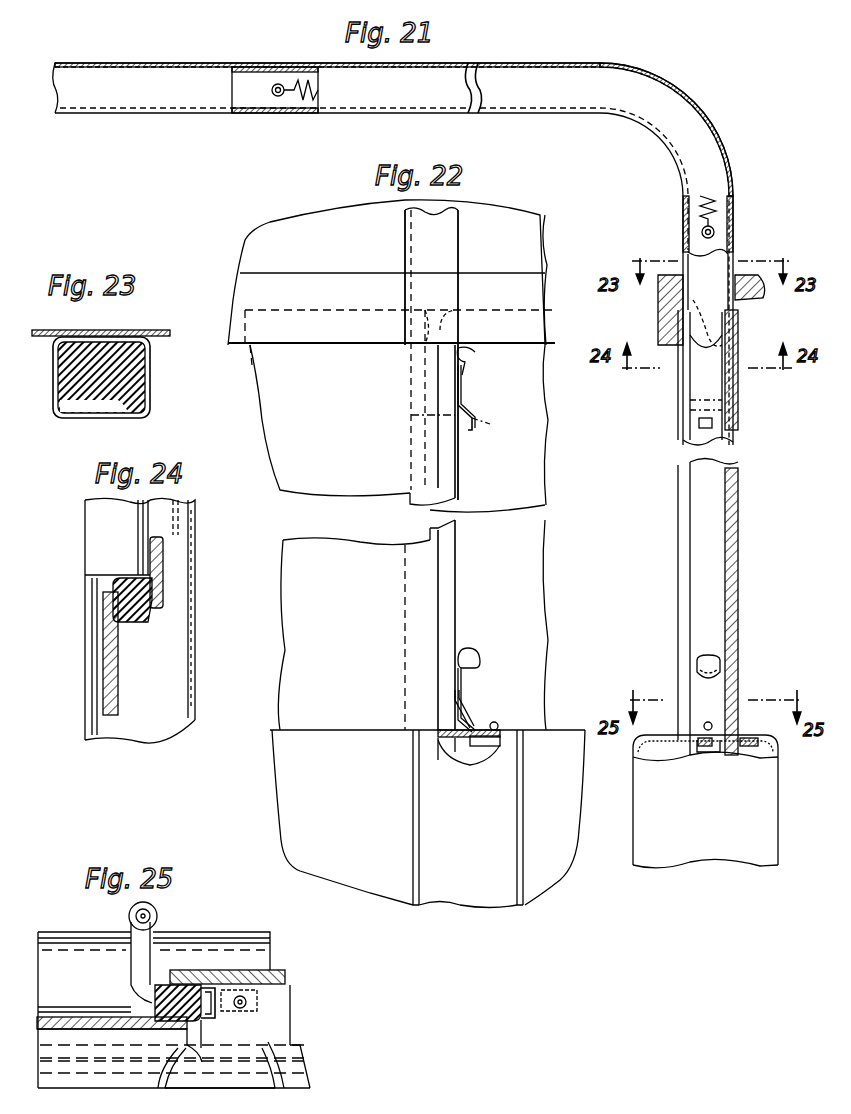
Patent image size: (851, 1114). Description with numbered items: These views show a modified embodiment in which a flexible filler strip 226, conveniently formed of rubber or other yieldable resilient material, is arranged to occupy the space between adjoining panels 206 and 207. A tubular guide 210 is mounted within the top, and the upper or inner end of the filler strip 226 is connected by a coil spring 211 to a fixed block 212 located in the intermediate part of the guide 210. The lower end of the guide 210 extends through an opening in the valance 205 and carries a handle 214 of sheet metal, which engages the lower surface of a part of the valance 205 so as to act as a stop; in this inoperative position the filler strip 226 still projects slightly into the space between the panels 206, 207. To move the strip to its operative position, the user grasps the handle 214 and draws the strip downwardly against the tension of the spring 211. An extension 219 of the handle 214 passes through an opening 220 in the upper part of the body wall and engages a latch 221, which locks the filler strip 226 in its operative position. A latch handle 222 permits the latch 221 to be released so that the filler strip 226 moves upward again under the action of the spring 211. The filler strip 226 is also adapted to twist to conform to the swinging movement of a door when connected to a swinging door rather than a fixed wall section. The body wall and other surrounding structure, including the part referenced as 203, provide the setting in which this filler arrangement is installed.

In FIG. 22, the housing 203 is at (312, 345).
In FIG. 21, the valance 205 is at (760, 296).
In FIG. 24, the valance 205 is at (193, 608).
In FIG. 22, the panel 206 is at (545, 560).
In FIG. 24, the panel 206 is at (165, 560).
In FIG. 25, the panel 206 is at (225, 975).
In FIG. 22, the panel 207 is at (683, 573).
In FIG. 24, the panel 207 is at (118, 670).
In FIG. 25, the panel 207 is at (85, 1017).
In FIG. 21, the tubular guide 210 is at (672, 150).
In FIG. 22, the tubular guide 210 is at (405, 248).
In FIG. 23, the tubular guide 210 is at (152, 396).
In FIG. 21, the coil spring 211 is at (700, 206).
In FIG. 21, the fixed block 212 is at (260, 100).
In FIG. 22, the handle 214 is at (468, 355).
In FIG. 25, the handle 214 is at (218, 1022).
In FIG. 22, the extension 219 is at (440, 768).
In FIG. 22, the opening 220 is at (488, 712).
In FIG. 22, the latch 221 is at (481, 748).
In FIG. 22, the latch handle 222 is at (495, 724).
In FIG. 25, the latch handle 222 is at (257, 1002).
In FIG. 22, the flexible filler strip 226 is at (448, 480).
In FIG. 23, the flexible filler strip 226 is at (152, 364).
In FIG. 24, the flexible filler strip 226 is at (135, 620).
In FIG. 25, the flexible filler strip 226 is at (165, 985).